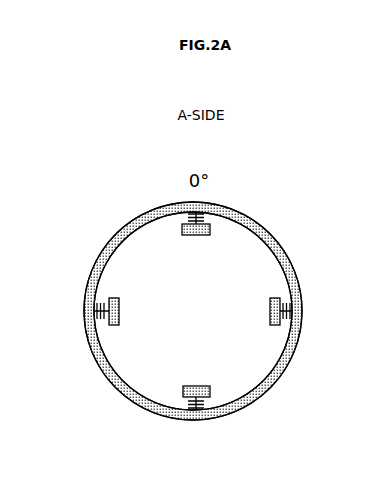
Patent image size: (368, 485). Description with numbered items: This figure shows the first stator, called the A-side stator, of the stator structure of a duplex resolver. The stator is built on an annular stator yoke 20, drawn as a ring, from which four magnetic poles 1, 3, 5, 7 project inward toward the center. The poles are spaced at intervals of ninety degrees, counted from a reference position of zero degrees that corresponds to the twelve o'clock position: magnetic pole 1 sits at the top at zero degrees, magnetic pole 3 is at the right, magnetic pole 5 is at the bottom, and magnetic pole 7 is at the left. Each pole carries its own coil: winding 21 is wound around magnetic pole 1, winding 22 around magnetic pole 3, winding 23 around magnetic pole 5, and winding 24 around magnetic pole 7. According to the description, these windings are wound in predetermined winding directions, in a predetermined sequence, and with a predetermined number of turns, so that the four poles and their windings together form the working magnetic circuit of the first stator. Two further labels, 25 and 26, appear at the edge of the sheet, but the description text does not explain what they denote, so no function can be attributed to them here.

The annular stator yoke 20 is at (252, 212).
The winding 21 is at (190, 216).
The winding 22 is at (290, 300).
The winding 23 is at (180, 410).
The winding 24 is at (100, 302).
The magnetic pole 1 is at (196, 242).
The magnetic pole 3 is at (263, 311).
The magnetic pole 5 is at (196, 379).
The magnetic pole 7 is at (122, 311).
The reference 25 is at (367, 232).
The reference 26 is at (348, 404).